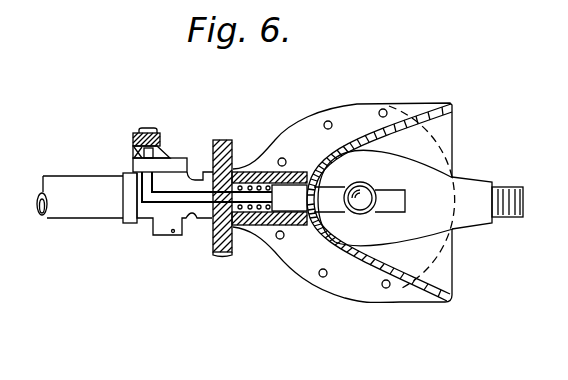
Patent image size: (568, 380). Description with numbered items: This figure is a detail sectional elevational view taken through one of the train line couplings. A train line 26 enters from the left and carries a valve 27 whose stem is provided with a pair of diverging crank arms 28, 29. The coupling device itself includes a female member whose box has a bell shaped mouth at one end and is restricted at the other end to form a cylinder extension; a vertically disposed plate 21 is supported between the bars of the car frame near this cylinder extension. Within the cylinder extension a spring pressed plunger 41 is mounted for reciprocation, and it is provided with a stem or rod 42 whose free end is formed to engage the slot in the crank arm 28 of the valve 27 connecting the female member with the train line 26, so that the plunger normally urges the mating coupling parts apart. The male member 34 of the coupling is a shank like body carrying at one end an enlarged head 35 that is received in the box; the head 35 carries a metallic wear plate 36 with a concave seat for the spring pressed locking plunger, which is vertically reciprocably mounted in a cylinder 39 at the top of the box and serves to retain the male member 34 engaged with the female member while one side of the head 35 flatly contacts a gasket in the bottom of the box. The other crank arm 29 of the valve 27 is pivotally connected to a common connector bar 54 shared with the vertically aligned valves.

The plate 21 is at (222, 252).
The train line 26 is at (77, 212).
The valve 27 is at (178, 208).
The crank arm 28 is at (133, 163).
The crank arm 29 is at (160, 156).
The male member 34 is at (477, 217).
The enlarged head 35 is at (380, 167).
The metallic wear plate 36 is at (335, 203).
The cylinder 39 is at (370, 198).
The spring pressed plunger 41 is at (282, 203).
The stem or rod 42 is at (162, 202).
The connector bar 54 is at (163, 148).